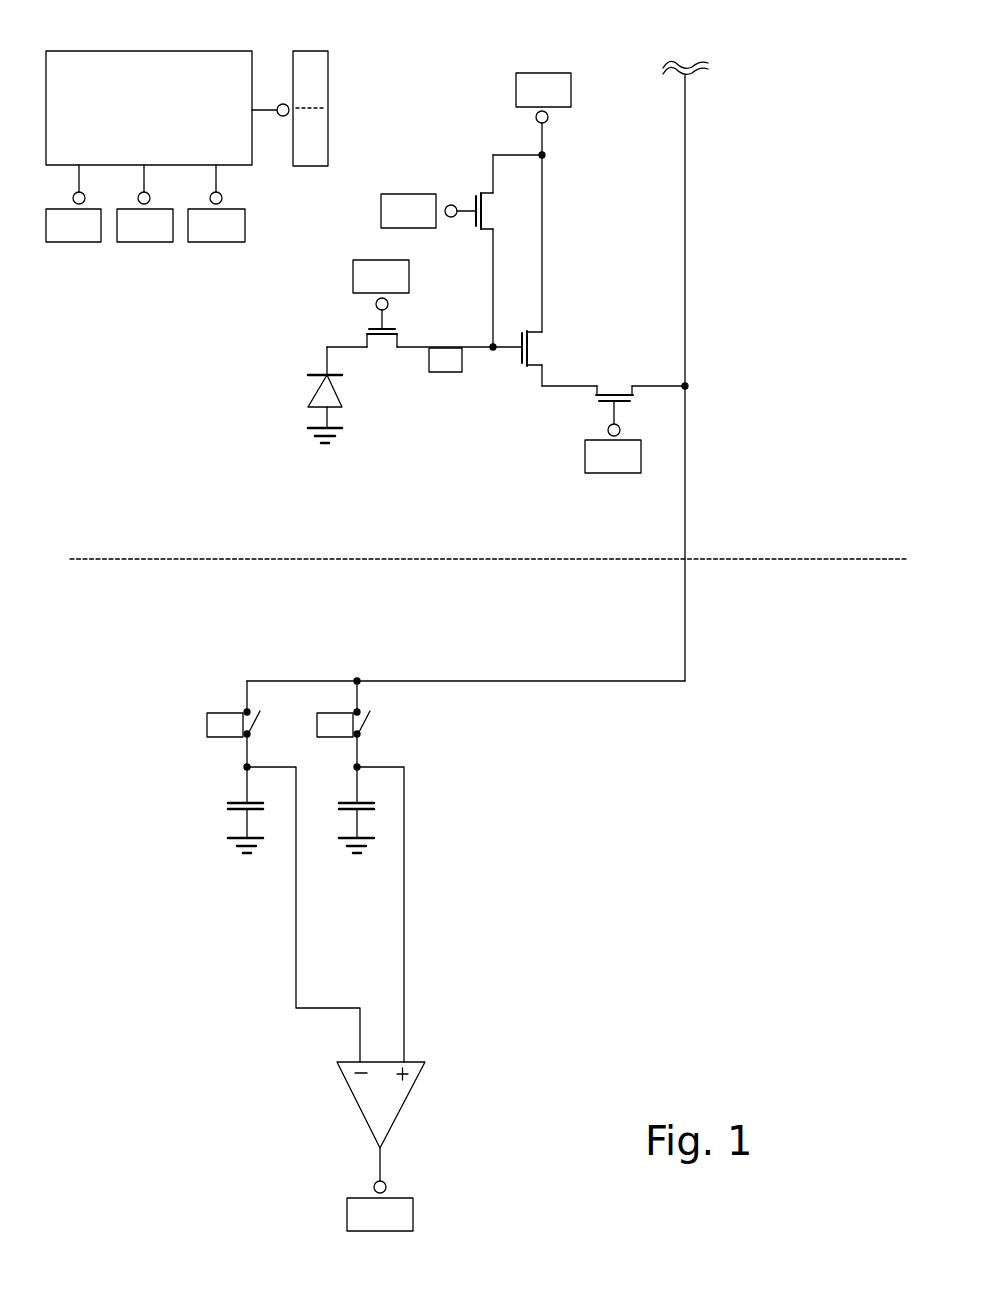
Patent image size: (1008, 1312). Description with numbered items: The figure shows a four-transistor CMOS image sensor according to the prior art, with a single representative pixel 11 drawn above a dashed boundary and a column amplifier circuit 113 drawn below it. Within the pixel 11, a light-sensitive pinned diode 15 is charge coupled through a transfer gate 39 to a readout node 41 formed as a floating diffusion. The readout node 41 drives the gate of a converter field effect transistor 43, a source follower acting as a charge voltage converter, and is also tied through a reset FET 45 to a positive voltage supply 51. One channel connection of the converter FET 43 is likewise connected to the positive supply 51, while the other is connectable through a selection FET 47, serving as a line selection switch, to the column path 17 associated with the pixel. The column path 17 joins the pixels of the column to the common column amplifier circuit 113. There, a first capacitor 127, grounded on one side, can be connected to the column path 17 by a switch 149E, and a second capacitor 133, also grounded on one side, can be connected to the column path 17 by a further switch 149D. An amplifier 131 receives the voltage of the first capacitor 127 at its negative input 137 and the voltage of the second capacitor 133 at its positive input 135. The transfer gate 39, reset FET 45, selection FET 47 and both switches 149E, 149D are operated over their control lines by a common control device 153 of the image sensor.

The control device 153 is at (137, 72).
The pixel 11 is at (265, 345).
The pinned diode 15 is at (315, 390).
The transfer gate 39 is at (368, 322).
The readout node 41 is at (450, 345).
The reset FET 45 is at (470, 189).
The positive voltage supply 51 is at (560, 72).
The converter field effect transistor 43 is at (545, 340).
The selection FET 47 is at (613, 378).
The column path 17 is at (685, 176).
The column amplifier circuit 113 is at (580, 930).
The switch 149E is at (266, 716).
The further switch 149D is at (365, 721).
The first capacitor 127 is at (222, 805).
The second capacitor 133 is at (335, 810).
The negative input 137 is at (347, 1052).
The positive input 135 is at (416, 1051).
The amplifier 131 is at (402, 1114).